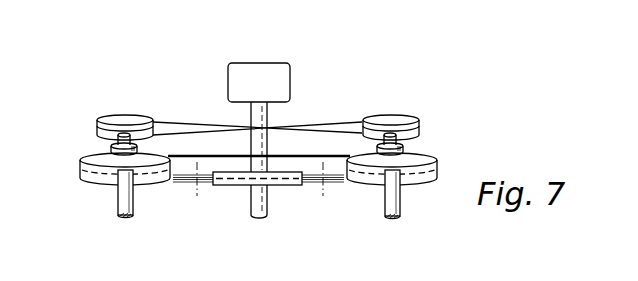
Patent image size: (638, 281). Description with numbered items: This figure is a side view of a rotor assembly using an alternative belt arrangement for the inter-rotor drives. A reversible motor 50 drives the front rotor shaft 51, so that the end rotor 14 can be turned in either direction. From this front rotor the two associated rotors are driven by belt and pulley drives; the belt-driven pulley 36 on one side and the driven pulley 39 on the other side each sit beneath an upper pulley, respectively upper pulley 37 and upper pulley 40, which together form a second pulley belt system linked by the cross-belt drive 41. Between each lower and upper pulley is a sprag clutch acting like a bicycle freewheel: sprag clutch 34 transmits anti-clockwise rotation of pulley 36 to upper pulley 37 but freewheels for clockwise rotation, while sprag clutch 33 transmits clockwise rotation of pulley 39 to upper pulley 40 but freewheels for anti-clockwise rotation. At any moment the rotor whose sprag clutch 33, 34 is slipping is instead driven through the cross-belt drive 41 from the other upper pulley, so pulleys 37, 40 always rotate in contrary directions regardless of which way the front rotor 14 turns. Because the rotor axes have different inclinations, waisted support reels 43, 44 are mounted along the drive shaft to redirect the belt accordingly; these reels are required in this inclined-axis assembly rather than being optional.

The end rotor 14 is at (235, 187).
The sprag clutch 33 is at (405, 146).
The sprag clutch 34 is at (112, 148).
The belt-driven pulley 36 is at (92, 156).
The upper pulley 37 is at (120, 115).
The driven pulley 39 is at (422, 182).
The upper pulley 40 is at (406, 115).
The cross-belt drive 41 is at (207, 122).
The waisted support reel 43 is at (192, 187).
The waisted support reel 44 is at (330, 186).
The reversible motor 50 is at (285, 75).
The front rotor shaft 51 is at (267, 210).